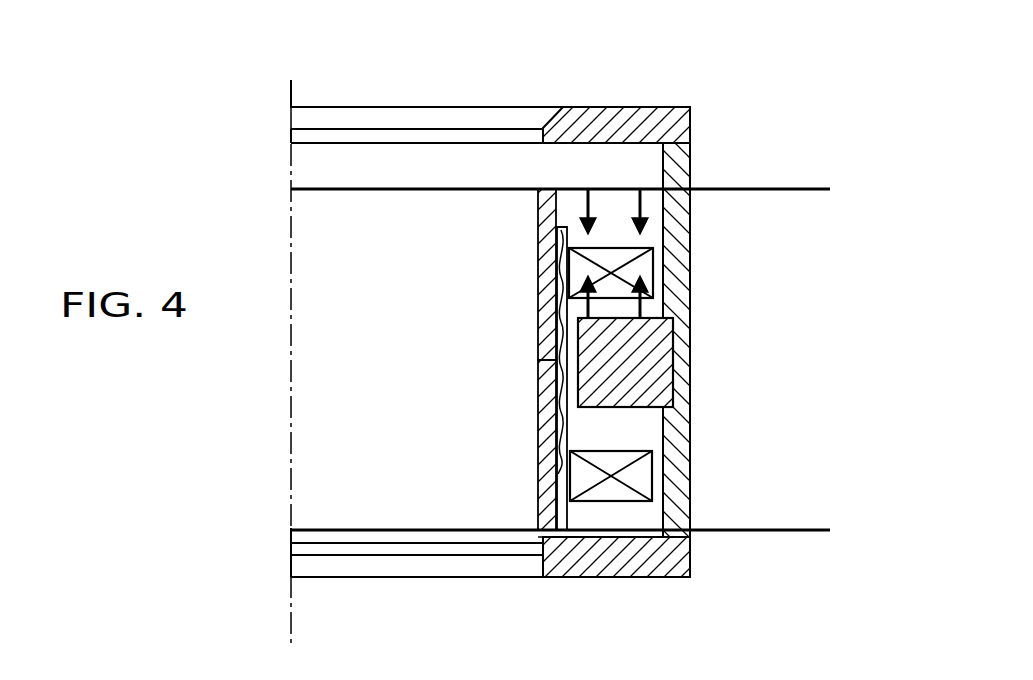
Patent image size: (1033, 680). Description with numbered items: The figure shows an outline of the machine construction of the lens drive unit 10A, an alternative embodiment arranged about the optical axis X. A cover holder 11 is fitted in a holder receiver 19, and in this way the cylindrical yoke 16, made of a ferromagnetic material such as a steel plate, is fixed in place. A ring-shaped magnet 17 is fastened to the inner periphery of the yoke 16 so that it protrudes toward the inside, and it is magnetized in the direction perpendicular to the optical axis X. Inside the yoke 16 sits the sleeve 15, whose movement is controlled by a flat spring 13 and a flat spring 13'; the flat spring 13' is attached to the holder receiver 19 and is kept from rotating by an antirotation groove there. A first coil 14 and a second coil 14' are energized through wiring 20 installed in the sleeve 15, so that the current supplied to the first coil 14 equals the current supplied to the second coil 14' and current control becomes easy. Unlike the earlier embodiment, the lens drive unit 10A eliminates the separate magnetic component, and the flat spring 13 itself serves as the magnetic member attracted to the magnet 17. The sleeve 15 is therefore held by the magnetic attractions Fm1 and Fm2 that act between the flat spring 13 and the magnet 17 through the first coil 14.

The lens drive unit 10A is at (699, 75).
The cover holder 11 is at (690, 129).
The flat spring 13 is at (558, 204).
The flat spring 13' is at (593, 519).
The first coil 14 is at (675, 273).
The second coil 14' is at (681, 476).
The sleeve 15 is at (558, 472).
The yoke 16 is at (690, 428).
The magnet 17 is at (627, 382).
The holder receiver 19 is at (636, 562).
The wiring 20 is at (557, 360).
The optical axis X is at (294, 344).
The magnetic attraction Fm1 is at (582, 203).
The magnetic attraction Fm2 is at (578, 320).